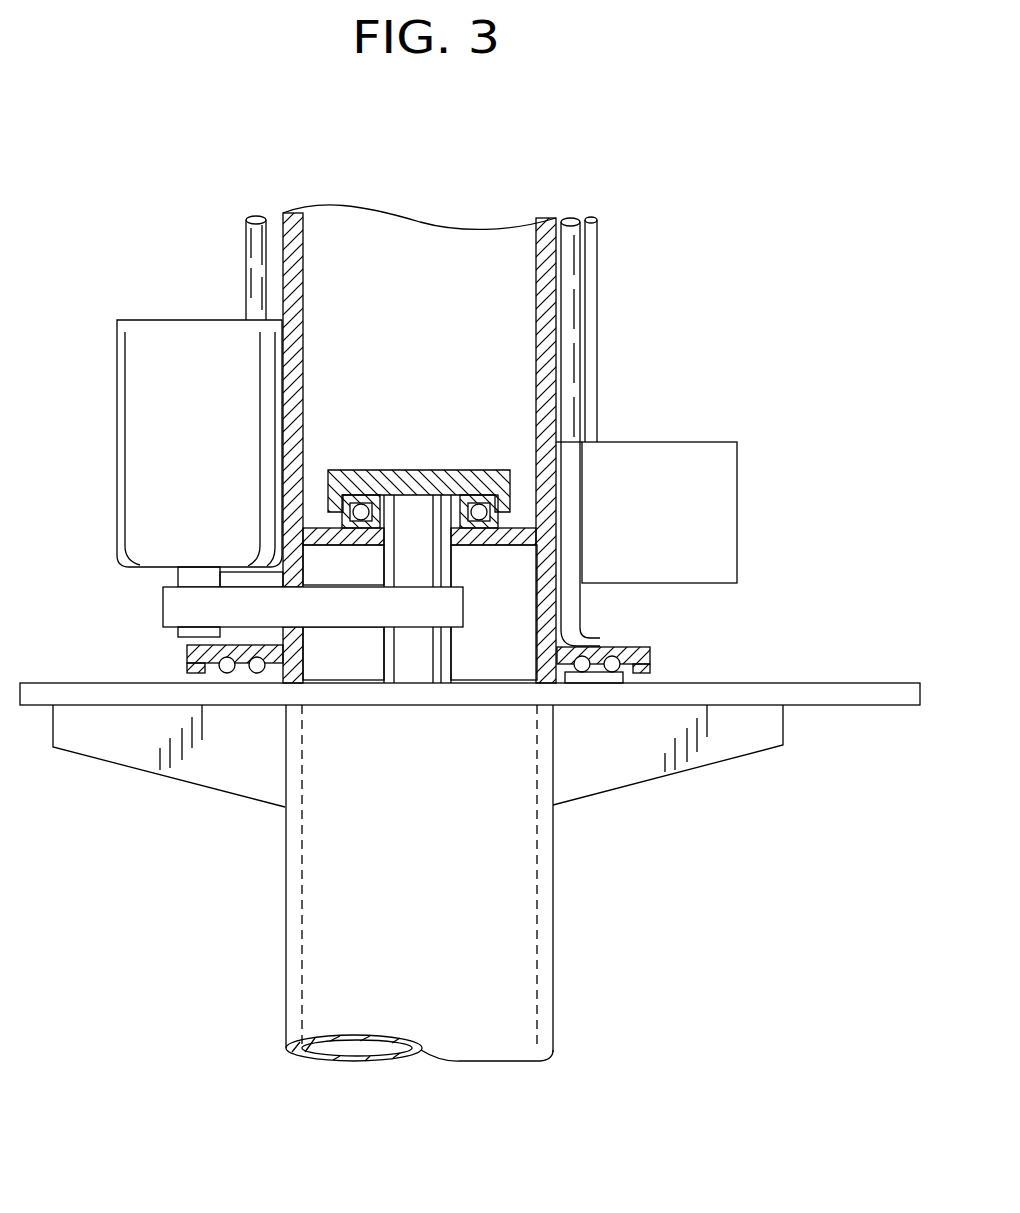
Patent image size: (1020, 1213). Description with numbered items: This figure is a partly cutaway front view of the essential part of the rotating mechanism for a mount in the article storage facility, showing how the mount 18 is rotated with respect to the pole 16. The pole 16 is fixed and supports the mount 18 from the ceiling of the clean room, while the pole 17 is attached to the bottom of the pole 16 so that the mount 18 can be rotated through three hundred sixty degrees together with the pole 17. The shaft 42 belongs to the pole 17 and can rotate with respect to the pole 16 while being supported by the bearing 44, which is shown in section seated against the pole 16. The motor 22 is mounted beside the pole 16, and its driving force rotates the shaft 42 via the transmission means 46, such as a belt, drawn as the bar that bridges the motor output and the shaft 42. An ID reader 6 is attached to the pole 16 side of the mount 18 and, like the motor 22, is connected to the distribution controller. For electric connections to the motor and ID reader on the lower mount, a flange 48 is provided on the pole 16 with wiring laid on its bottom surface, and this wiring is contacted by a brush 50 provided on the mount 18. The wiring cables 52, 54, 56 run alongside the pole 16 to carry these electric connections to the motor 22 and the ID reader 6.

The ID reader 6 is at (690, 505).
The pole 16 is at (548, 343).
The pole 17 is at (553, 957).
The mount 18 is at (873, 698).
The motor 22 is at (148, 392).
The shaft 42 is at (412, 670).
The bearing 44 is at (476, 490).
The transmission means 46 is at (173, 607).
The flange 48 is at (628, 645).
The brush 50 is at (595, 677).
The wiring cable 52 is at (573, 288).
The wiring cable 54 is at (250, 247).
The wiring cable 56 is at (593, 235).